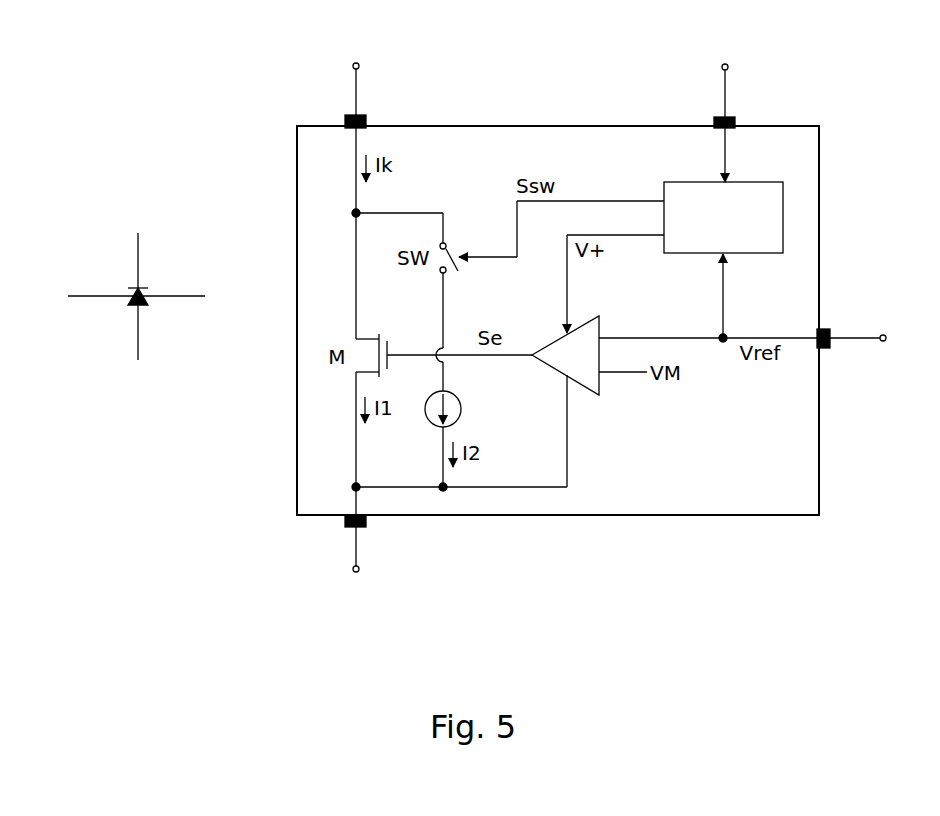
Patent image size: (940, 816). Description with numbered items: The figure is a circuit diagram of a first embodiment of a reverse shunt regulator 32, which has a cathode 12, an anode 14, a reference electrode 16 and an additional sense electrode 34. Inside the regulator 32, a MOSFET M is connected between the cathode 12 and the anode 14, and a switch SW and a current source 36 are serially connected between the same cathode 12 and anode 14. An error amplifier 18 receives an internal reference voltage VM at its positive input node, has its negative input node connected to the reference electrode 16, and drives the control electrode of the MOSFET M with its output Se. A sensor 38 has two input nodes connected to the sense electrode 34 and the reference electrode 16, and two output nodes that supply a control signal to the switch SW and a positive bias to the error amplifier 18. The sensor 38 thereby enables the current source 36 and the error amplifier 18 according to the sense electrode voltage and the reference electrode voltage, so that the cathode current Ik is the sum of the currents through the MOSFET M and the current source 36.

The cathode 12 is at (137, 258).
The anode 14 is at (140, 330).
The reference electrode 16 is at (172, 295).
The error amplifier 18 is at (545, 347).
The reverse shunt regulator 32 is at (128, 305).
The sense electrode 34 is at (100, 298).
The current source 36 is at (463, 408).
The sensor 38 is at (690, 254).